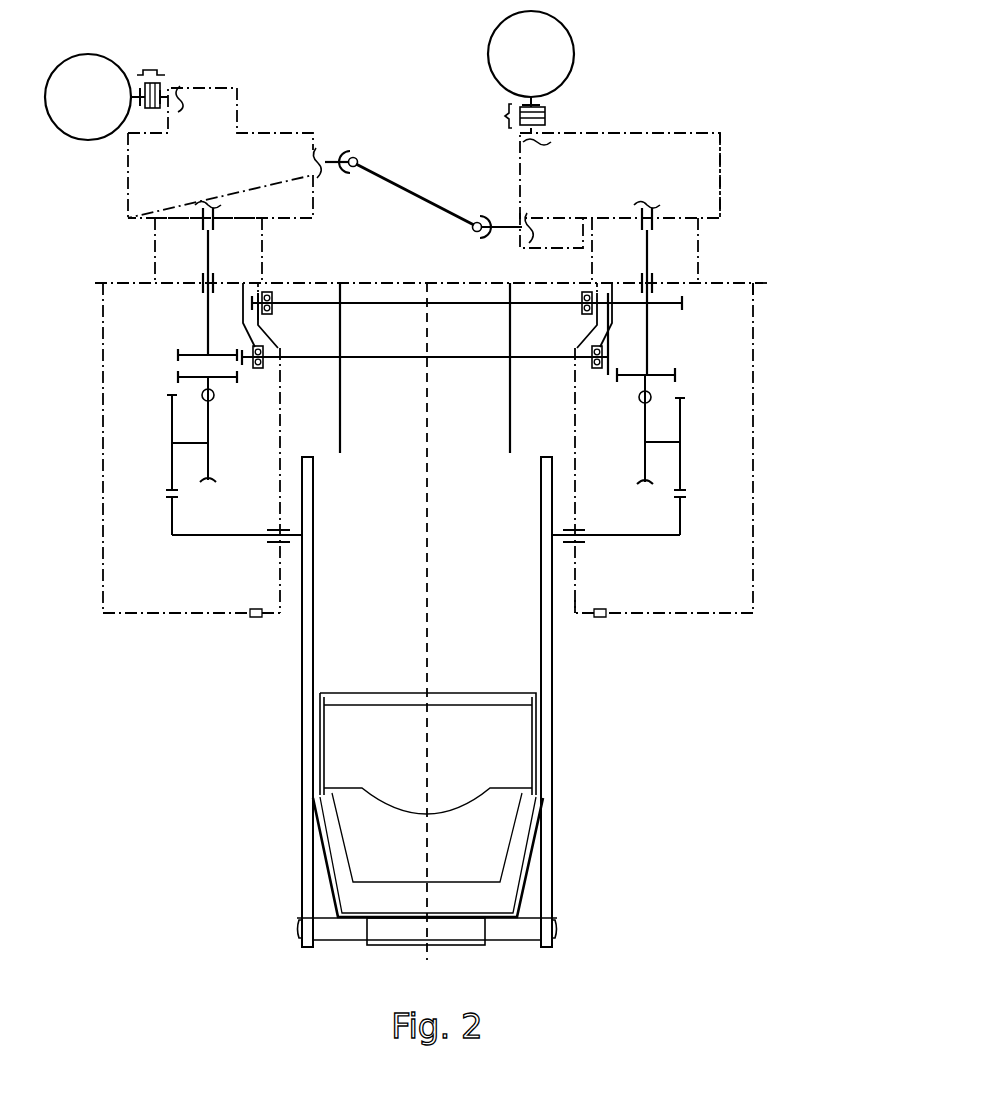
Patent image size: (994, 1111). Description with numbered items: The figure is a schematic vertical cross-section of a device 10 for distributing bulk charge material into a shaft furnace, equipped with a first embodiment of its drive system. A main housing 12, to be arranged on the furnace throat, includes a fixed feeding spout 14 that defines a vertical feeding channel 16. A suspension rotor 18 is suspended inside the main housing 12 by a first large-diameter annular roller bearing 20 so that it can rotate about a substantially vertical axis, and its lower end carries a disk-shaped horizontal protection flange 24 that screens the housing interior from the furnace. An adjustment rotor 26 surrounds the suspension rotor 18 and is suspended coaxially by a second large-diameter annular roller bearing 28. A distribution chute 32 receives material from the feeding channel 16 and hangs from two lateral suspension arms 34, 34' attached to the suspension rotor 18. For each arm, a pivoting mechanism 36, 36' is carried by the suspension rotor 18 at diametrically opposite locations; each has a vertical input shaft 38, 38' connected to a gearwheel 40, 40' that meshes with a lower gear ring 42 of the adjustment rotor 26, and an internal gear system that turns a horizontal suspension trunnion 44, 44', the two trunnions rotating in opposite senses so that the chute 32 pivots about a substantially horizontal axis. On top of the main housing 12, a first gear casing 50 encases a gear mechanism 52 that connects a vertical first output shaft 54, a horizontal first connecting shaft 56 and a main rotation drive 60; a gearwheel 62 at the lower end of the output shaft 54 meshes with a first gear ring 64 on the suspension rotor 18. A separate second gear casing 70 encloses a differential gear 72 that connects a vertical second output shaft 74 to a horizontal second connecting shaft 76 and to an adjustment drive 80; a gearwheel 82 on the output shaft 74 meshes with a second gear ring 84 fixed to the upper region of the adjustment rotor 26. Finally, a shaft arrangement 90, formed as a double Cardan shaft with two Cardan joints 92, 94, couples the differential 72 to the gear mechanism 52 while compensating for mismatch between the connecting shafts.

The device 10 is at (785, 85).
The main housing 12 is at (755, 326).
The fixed feeding spout 14 is at (341, 332).
The vertical feeding channel 16 is at (449, 621).
The suspension rotor 18 is at (282, 440).
The first large-diameter annular roller bearing 20 is at (274, 312).
The disk-shaped horizontal protection flange 24 is at (582, 616).
The adjustment rotor 26 is at (606, 378).
The second large-diameter annular roller bearing 28 is at (603, 350).
The distribution chute 32 is at (427, 819).
The lateral suspension arm 34 is at (336, 702).
The lateral suspension arm 34' is at (518, 702).
The pivoting mechanism 36 is at (156, 465).
The pivoting mechanism 36' is at (699, 466).
The vertical input shaft 38 is at (223, 429).
The vertical input shaft 38' is at (619, 429).
The gearwheel 40 is at (181, 373).
The gearwheel 40' is at (679, 378).
The lower gear ring 42 is at (250, 372).
The horizontal suspension trunnion 44 is at (237, 558).
The horizontal suspension trunnion 44' is at (616, 556).
The first gear casing 50 is at (628, 122).
The gear mechanism 52 is at (620, 208).
The first output shaft 54 is at (650, 242).
The first connecting shaft 56 is at (506, 222).
The main rotation drive 60 is at (531, 72).
The gearwheel 62 is at (670, 306).
The first gear ring 64 is at (580, 318).
The second gear casing 70 is at (283, 100).
The differential gear 72 is at (220, 185).
The second output shaft 74 is at (202, 250).
The second connecting shaft 76 is at (327, 166).
The adjustment drive 80 is at (114, 97).
The gearwheel 82 is at (175, 353).
The second gear ring 84 is at (240, 345).
The shaft arrangement 90 is at (410, 165).
The Cardan joint 92 is at (472, 236).
The Cardan joint 94 is at (358, 150).